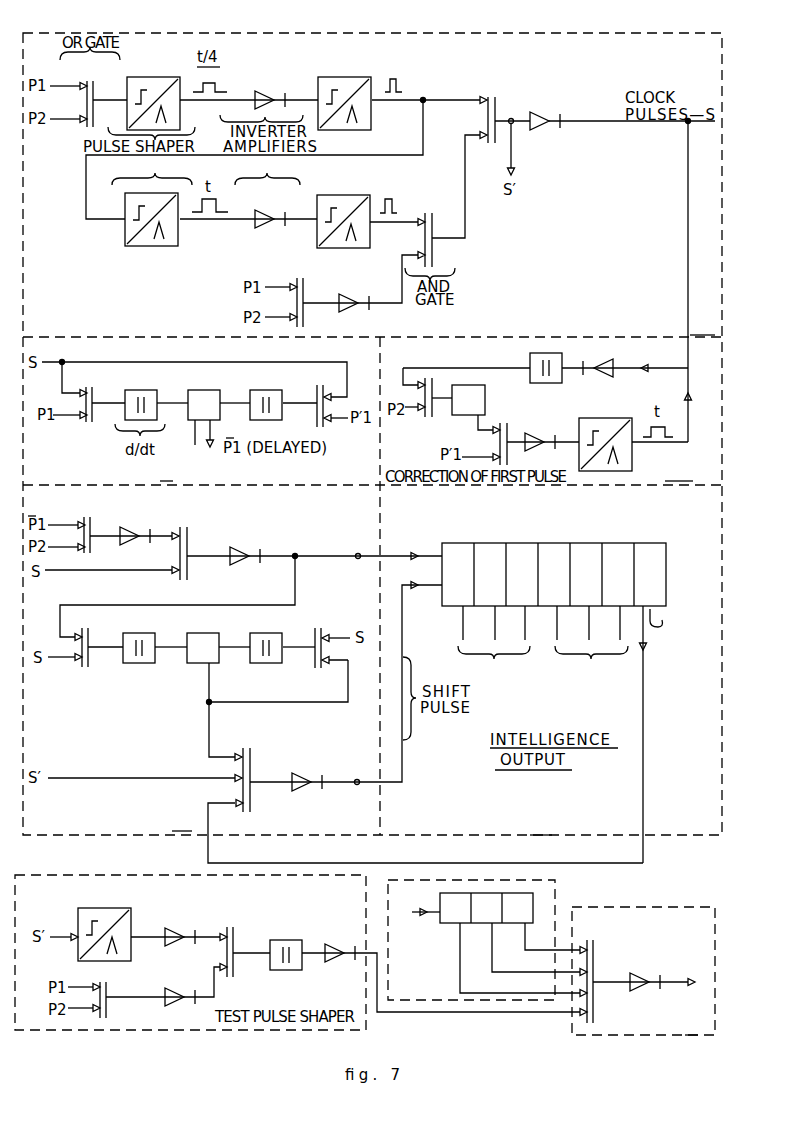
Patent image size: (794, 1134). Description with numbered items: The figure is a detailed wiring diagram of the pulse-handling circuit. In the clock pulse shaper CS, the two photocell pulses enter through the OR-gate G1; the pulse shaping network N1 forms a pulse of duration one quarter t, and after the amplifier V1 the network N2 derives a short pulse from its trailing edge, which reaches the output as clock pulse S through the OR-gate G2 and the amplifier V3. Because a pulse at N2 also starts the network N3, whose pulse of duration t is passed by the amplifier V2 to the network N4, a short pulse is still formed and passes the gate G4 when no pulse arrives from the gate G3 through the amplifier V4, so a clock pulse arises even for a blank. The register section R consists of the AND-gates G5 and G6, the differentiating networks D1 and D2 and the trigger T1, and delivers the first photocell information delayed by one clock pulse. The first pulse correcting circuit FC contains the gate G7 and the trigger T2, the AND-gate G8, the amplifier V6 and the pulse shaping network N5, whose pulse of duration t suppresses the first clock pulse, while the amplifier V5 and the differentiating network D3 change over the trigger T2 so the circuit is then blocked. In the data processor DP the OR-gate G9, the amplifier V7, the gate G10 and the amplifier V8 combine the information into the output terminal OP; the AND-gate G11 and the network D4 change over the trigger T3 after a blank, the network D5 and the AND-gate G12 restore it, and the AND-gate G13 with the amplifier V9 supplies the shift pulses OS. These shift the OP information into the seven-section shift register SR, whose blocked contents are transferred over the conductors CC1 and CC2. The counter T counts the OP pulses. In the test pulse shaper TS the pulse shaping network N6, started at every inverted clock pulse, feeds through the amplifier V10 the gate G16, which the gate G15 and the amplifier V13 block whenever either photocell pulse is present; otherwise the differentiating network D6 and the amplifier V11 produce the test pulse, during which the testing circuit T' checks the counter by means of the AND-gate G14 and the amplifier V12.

The OR-gate G1 is at (99, 84).
The OR-gate G2 is at (498, 100).
The gate G3 is at (309, 262).
The gate G4 is at (435, 215).
The AND-gate G5 is at (98, 375).
The AND-gate G6 is at (330, 376).
The gate G7 is at (432, 396).
The AND-gate G8 is at (515, 410).
The OR-gate G9 is at (97, 503).
The gate G10 is at (202, 512).
The AND-gate G11 is at (99, 617).
The AND-gate G12 is at (295, 628).
The AND-gate G13 is at (260, 735).
The AND-gate G14 is at (606, 925).
The gate G15 is at (107, 996).
The gate G16 is at (247, 915).
The pulse shaping network N1 is at (172, 76).
The network N2 is at (323, 77).
The network N3 is at (172, 194).
The network N4 is at (322, 196).
The pulse shaping network N5 is at (585, 418).
The pulse shaping network N6 is at (126, 908).
The amplifier V1 is at (276, 82).
The amplifier V2 is at (276, 202).
The amplifier V3 is at (539, 110).
The amplifier V4 is at (350, 295).
The amplifier V5 is at (605, 370).
The amplifier V6 is at (542, 436).
The amplifier V7 is at (143, 522).
The amplifier V8 is at (247, 546).
The amplifier V9 is at (307, 771).
The amplifier V10 is at (183, 919).
The amplifier V11 is at (336, 949).
The amplifier V12 is at (642, 974).
The amplifier V13 is at (183, 985).
The differentiating network D1 is at (156, 390).
The differentiating network D2 is at (281, 390).
The differentiating network D3 is at (536, 366).
The differentiating network D4 is at (154, 630).
The network D5 is at (281, 632).
The differentiating network D6 is at (301, 940).
The trigger T1 is at (216, 390).
The trigger T2 is at (481, 386).
The trigger T3 is at (217, 630).
The conductors CC1 is at (494, 640).
The conductors CC2 is at (591, 641).
The output terminal OP is at (360, 546).
The shift pulses OS is at (357, 771).
The clock pulse shaper CS is at (615, 327).
The register section R is at (101, 473).
The first pulse correcting circuit FC is at (679, 473).
The data processor DP is at (111, 823).
The shift register SR is at (535, 689).
The test pulse shaper TS is at (185, 1031).
The counter T is at (490, 947).
The testing circuit T' is at (658, 1019).